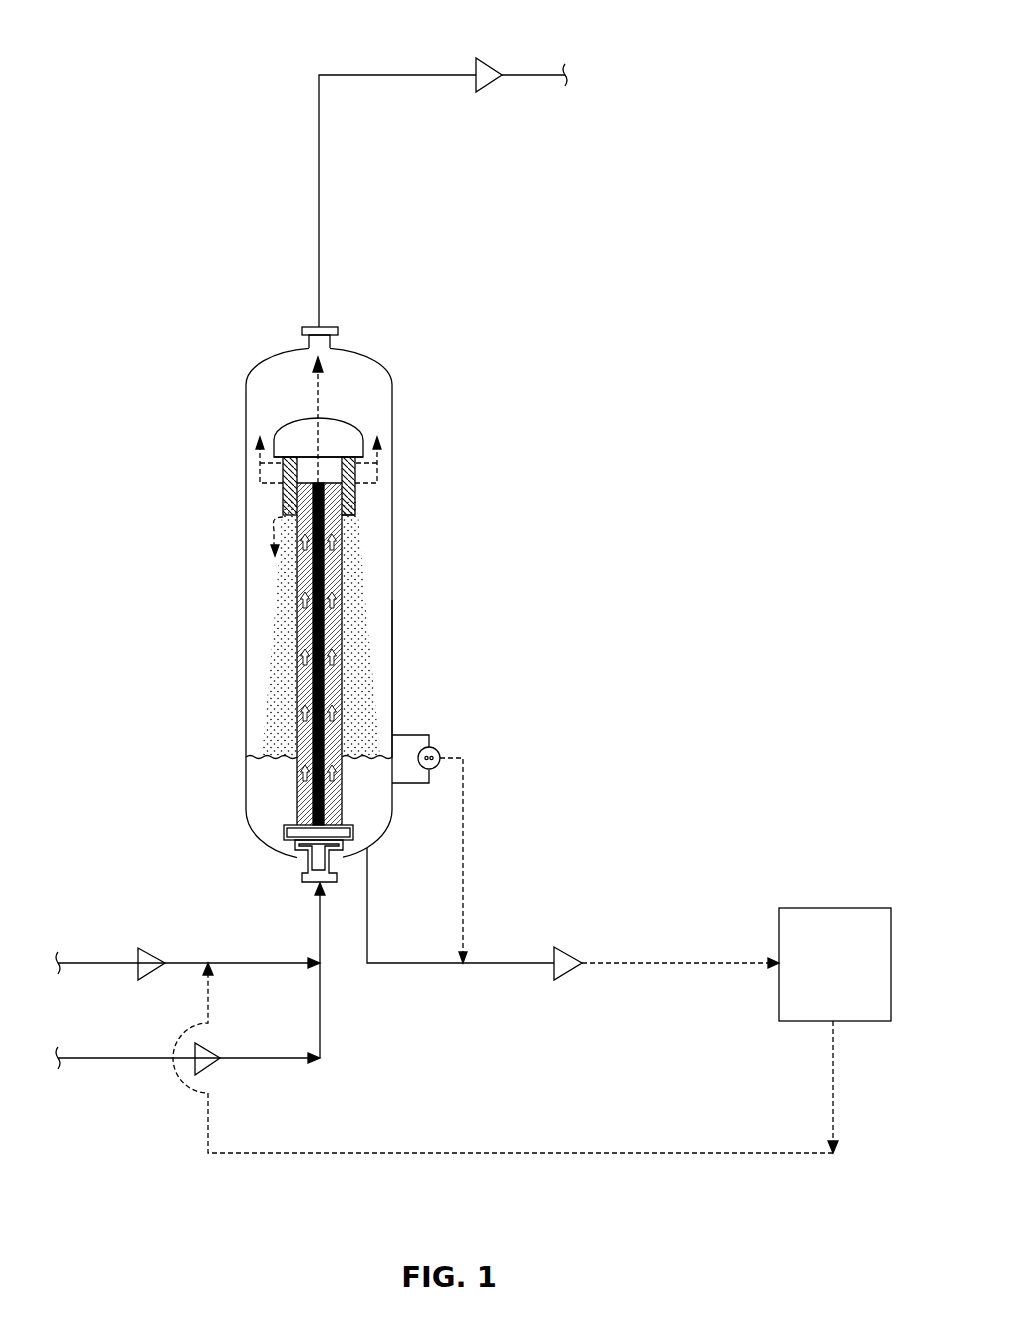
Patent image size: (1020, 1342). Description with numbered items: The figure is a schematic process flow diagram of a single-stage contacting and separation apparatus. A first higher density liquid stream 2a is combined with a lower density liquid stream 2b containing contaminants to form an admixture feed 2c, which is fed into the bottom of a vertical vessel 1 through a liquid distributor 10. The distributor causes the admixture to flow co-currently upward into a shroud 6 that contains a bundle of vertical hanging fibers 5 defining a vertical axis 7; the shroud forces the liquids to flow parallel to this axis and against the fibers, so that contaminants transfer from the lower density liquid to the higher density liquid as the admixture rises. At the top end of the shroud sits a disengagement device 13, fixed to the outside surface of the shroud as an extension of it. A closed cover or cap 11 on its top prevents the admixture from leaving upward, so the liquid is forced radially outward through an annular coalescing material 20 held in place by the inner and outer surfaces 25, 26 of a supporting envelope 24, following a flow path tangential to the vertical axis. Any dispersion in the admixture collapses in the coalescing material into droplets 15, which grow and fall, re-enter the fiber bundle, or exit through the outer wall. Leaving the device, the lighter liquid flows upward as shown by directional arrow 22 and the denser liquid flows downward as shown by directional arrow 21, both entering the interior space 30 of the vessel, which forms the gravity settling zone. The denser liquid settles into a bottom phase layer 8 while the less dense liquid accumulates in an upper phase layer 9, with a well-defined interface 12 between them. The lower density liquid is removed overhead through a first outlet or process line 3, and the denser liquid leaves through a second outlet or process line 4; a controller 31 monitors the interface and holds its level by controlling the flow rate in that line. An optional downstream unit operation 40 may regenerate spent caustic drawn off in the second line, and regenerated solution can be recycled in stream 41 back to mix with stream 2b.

The vessel 1 is at (393, 580).
The first higher density liquid stream 2a is at (115, 1059).
The lower density liquid stream 2b is at (95, 962).
The admixture feed 2c is at (320, 947).
The first outlet or process line 3 is at (397, 75).
The second outlet or process line 4 is at (508, 965).
The hanging fibers 5 is at (319, 650).
The shroud 6 is at (343, 687).
The vertical axis 7 is at (320, 392).
The bottom phase layer 8 is at (265, 768).
The upper phase layer 9 is at (381, 713).
The liquid distributor 10 is at (313, 848).
The closed cover or cap 11 is at (300, 417).
The interface 12 is at (260, 754).
The disengagement device 13 is at (348, 504).
The droplets 15 is at (356, 620).
The coalescing material 20 is at (283, 490).
The directional arrow 21 is at (272, 530).
The directional arrow 22 is at (258, 463).
The supporting envelope 24 is at (344, 517).
The inner surface 25 is at (363, 447).
The outer surface 26 is at (355, 470).
The interior space 30 is at (262, 625).
The controller 31 is at (438, 751).
The downstream unit operation 40 is at (817, 978).
The recycle stream 41 is at (516, 1155).